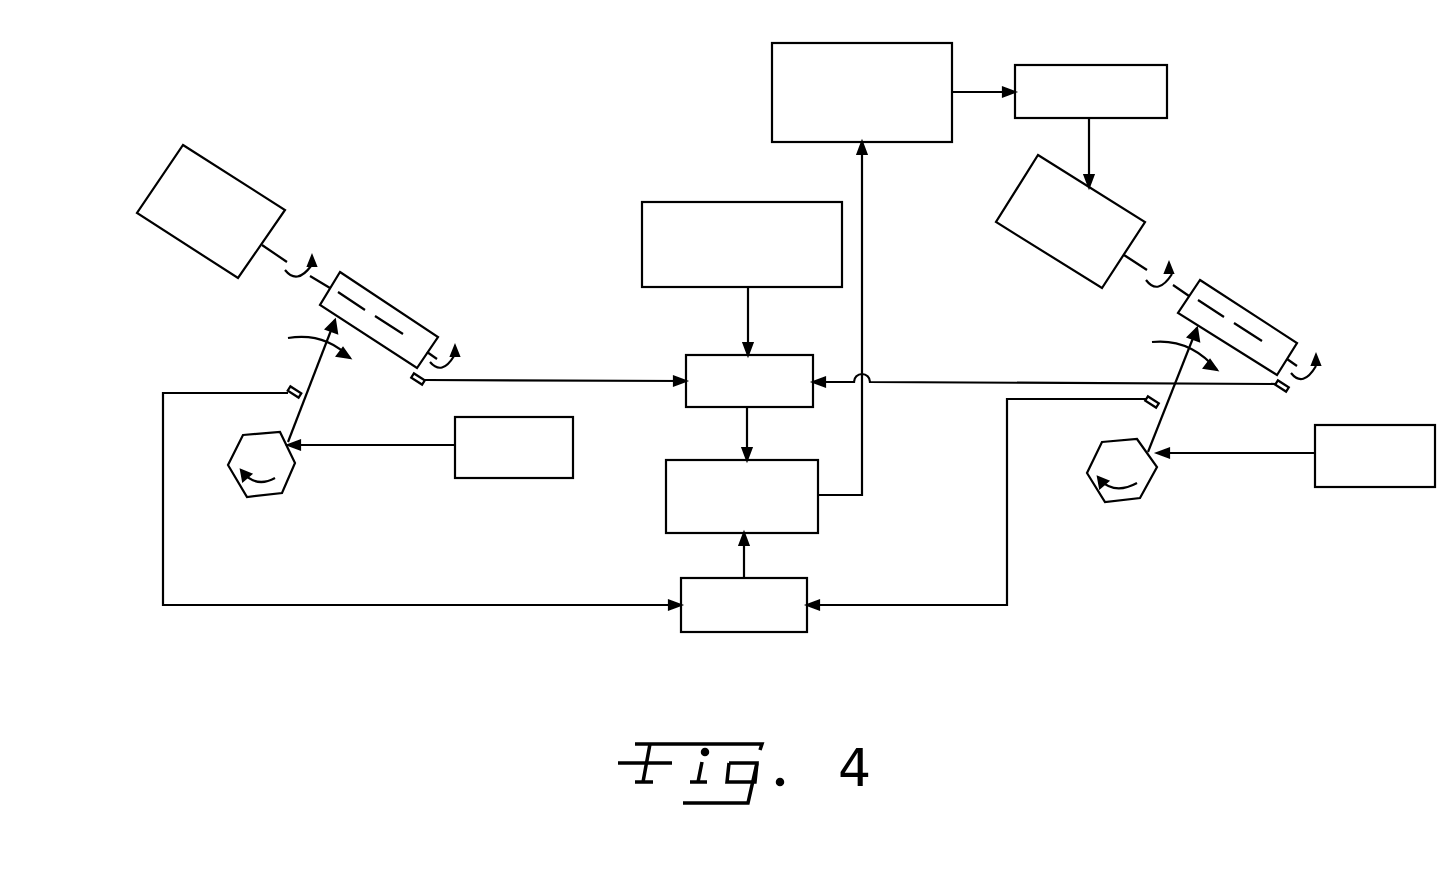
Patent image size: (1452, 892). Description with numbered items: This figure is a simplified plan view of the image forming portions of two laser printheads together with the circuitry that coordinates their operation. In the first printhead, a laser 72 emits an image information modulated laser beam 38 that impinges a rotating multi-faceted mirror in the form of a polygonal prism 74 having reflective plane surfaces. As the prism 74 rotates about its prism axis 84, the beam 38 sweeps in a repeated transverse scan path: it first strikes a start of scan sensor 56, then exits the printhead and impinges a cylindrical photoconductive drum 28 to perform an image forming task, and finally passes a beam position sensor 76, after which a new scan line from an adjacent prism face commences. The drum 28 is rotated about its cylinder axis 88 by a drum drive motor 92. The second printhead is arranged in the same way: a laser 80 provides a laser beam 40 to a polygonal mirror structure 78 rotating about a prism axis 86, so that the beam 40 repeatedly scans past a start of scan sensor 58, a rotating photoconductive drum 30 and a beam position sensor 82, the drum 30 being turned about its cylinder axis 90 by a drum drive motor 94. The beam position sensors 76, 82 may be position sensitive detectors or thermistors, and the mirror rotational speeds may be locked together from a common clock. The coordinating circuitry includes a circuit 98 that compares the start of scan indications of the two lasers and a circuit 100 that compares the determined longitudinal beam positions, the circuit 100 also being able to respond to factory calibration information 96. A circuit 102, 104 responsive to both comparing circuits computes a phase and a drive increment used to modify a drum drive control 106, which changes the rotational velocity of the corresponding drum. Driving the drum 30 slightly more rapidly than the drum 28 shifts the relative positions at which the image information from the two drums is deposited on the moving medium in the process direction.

The photoconductive drum 28 is at (393, 303).
The photoconductive drum 30 is at (1240, 303).
The laser beam 38 is at (357, 445).
The laser beam 40 is at (1212, 453).
The start of scan sensor 56 is at (291, 388).
The start of scan sensor 58 is at (1147, 403).
The laser 72 is at (483, 480).
The polygonal prism 74 is at (292, 477).
The beam position sensor 76 is at (412, 382).
The polygonal mirror structure 78 is at (1127, 500).
The laser 80 is at (1383, 425).
The beam position sensor 82 is at (1280, 392).
The prism axis 84 is at (262, 462).
The prism axis 86 is at (1123, 470).
The cylinder axis 88 is at (282, 253).
The cylinder axis 90 is at (1133, 260).
The drum drive motor 92 is at (228, 168).
The drum drive motor 94 is at (1030, 247).
The factory calibration information 96 is at (642, 212).
The circuit for comparing start of scan indications 98 is at (752, 632).
The circuit for comparing longitudinal beam positions 100 is at (713, 355).
The circuit responsive to comparing circuits 102 is at (665, 497).
The circuit for computing drive increment 104 is at (772, 63).
The drum drive control 106 is at (1167, 82).